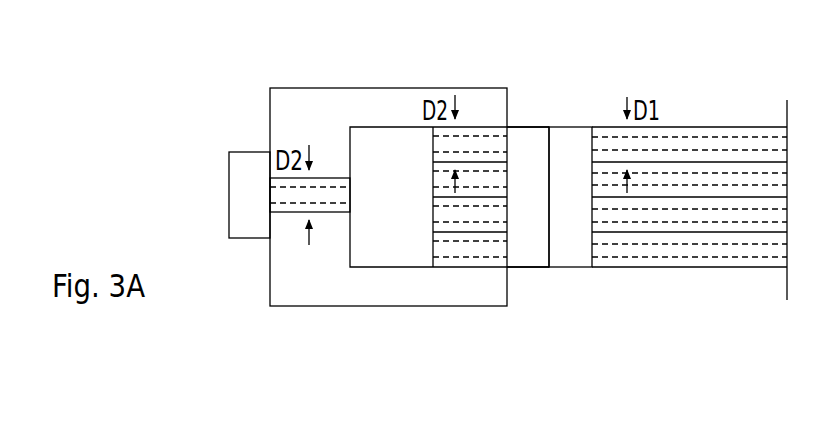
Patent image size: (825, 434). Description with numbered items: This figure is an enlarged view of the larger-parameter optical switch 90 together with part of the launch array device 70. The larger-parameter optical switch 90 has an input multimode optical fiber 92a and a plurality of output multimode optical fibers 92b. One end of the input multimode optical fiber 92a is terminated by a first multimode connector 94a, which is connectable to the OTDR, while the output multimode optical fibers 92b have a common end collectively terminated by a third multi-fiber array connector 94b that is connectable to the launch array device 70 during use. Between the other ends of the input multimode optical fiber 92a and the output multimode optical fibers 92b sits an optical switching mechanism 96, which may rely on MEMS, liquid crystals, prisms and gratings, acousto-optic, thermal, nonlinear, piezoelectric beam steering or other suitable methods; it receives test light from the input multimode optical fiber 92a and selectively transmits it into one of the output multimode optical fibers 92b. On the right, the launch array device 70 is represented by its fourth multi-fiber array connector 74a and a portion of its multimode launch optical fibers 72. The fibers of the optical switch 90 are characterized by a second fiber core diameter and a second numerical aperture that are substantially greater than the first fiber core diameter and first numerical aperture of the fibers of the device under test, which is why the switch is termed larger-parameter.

The launch array device 70 is at (735, 275).
The multimode launch optical fibers 72 is at (712, 238).
The fourth multi-fiber array connector 74a is at (570, 126).
The larger-parameter optical switch 90 is at (494, 313).
The input multimode optical fiber 92a is at (330, 176).
The output multimode optical fibers 92b is at (480, 238).
The first multimode connector 94a is at (250, 152).
The third multi-fiber array connector 94b is at (527, 125).
The optical switching mechanism 96 is at (390, 267).